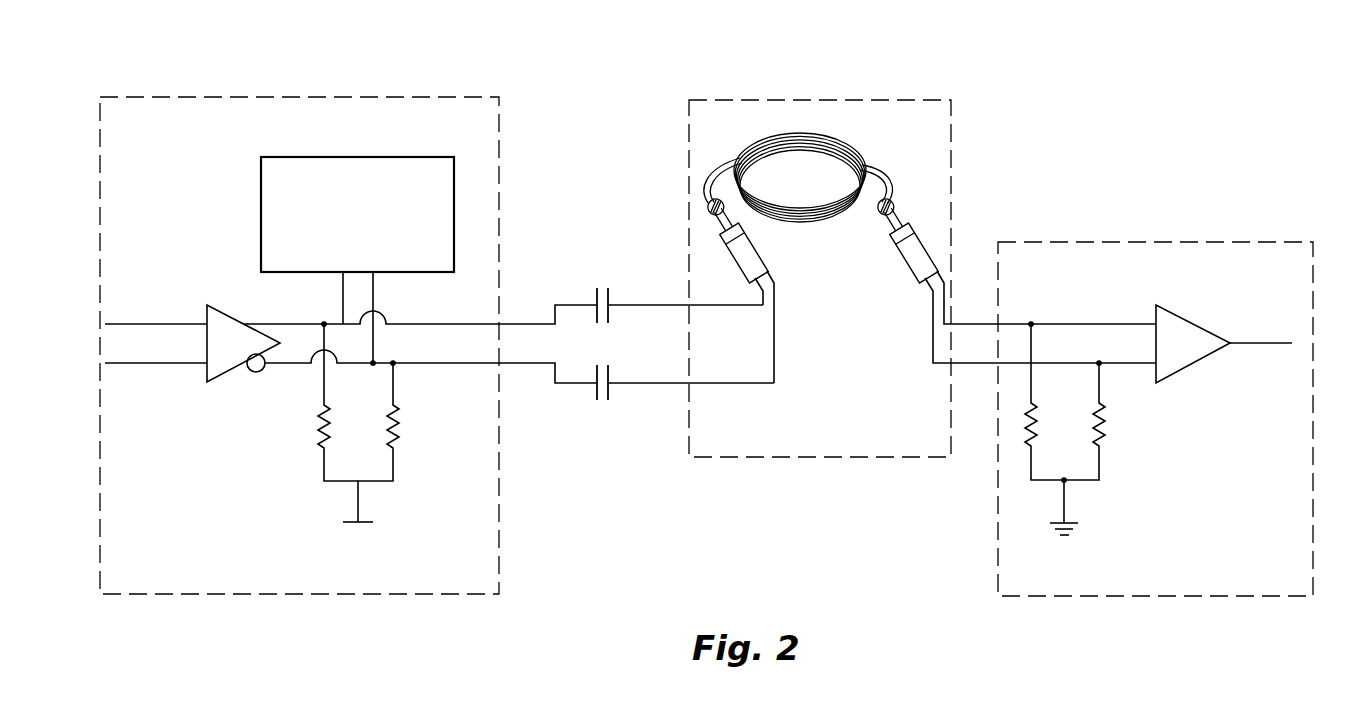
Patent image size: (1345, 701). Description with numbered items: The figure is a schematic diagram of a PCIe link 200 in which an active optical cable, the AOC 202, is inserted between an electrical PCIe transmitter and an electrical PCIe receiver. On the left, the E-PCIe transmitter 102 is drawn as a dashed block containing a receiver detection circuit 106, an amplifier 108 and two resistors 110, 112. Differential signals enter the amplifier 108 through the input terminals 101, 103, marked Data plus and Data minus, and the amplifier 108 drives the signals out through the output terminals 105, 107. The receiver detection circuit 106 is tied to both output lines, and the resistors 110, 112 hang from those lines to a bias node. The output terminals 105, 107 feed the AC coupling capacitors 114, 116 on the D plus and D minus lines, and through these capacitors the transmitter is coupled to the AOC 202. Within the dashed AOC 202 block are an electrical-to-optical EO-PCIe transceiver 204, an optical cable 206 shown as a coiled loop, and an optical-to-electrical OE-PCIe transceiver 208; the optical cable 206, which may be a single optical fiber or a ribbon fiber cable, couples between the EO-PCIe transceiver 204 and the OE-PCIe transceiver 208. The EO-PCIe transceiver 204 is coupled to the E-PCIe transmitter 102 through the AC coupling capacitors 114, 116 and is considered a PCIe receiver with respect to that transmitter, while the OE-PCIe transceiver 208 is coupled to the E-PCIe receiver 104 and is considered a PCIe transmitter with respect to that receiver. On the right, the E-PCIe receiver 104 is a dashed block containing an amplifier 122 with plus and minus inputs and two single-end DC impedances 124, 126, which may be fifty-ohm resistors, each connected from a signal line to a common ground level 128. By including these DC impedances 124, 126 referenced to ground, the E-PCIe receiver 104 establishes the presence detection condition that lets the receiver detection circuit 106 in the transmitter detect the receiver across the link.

The PCIe link 200 is at (1244, 72).
The E-PCIe transmitter 102 is at (143, 124).
The E-PCIe receiver 104 is at (1155, 419).
The receiver detection circuit 106 is at (405, 236).
The input terminal 101 is at (118, 324).
The input terminal 103 is at (116, 363).
The output terminal 105 is at (418, 324).
The output terminal 107 is at (418, 363).
The amplifier 108 is at (225, 373).
The resistor 110 is at (318, 440).
The resistor 112 is at (397, 444).
The AC coupling capacitor 114 is at (608, 293).
The AC coupling capacitor 116 is at (608, 395).
The amplifier 122 is at (1172, 377).
The DC impedance 124 is at (1025, 440).
The DC impedance 126 is at (1104, 445).
The ground 128 is at (1085, 523).
The AOC 202 is at (734, 124).
The EO-PCIe transceiver 204 is at (745, 245).
The optical cable 206 is at (858, 150).
The OE-PCIe transceiver 208 is at (918, 270).